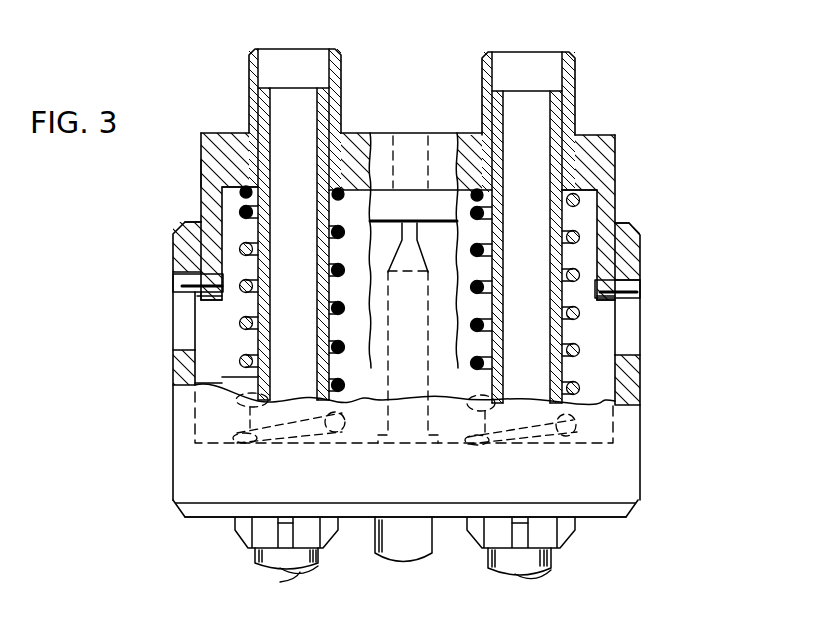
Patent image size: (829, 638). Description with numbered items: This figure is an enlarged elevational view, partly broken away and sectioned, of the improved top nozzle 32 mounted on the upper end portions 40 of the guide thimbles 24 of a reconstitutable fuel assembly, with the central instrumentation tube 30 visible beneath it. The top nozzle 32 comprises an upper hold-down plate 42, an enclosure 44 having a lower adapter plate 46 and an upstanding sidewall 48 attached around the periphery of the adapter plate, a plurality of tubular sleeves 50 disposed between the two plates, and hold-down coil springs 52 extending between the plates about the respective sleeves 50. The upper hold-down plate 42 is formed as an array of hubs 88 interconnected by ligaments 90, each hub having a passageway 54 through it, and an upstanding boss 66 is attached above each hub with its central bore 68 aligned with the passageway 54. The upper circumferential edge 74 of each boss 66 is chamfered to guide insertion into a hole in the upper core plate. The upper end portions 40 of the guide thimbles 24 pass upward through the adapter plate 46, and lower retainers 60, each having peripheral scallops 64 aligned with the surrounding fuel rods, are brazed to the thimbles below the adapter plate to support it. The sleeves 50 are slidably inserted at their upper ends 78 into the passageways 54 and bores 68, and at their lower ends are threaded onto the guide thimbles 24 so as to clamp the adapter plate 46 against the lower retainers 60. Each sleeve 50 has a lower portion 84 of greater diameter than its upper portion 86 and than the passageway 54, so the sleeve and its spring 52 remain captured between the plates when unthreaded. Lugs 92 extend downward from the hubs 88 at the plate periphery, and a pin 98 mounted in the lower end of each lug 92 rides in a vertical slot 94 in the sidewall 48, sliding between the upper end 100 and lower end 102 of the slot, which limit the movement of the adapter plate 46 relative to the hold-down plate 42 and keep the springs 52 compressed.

The guide thimbles 24 is at (254, 565).
The instrumentation tube 30 is at (408, 546).
The top nozzle 32 is at (199, 132).
The upper end portions 40 is at (262, 557).
The upper hold-down plate 42 is at (608, 133).
The enclosure 44 is at (643, 406).
The lower adapter plate 46 is at (201, 508).
The upstanding sidewall 48 is at (188, 363).
The tubular sleeves 50 is at (253, 238).
The hold-down coil springs 52 is at (242, 204).
The passageways 54 is at (318, 162).
The lower retainers 60 is at (240, 522).
The scallops 64 is at (303, 532).
The upstanding bosses 66 is at (248, 73).
The central bores 68 is at (263, 73).
The upper circumferential edge 74 is at (253, 52).
The upper ends 78 is at (296, 103).
The lower portion 84 is at (262, 406).
The upper portion 86 is at (230, 170).
The hubs 88 is at (233, 158).
The ligaments 90 is at (393, 133).
The lugs 92 is at (215, 217).
The vertical slot 94 is at (178, 306).
The pin 98 is at (188, 281).
The upper end 100 is at (185, 286).
The lower end 102 is at (182, 333).